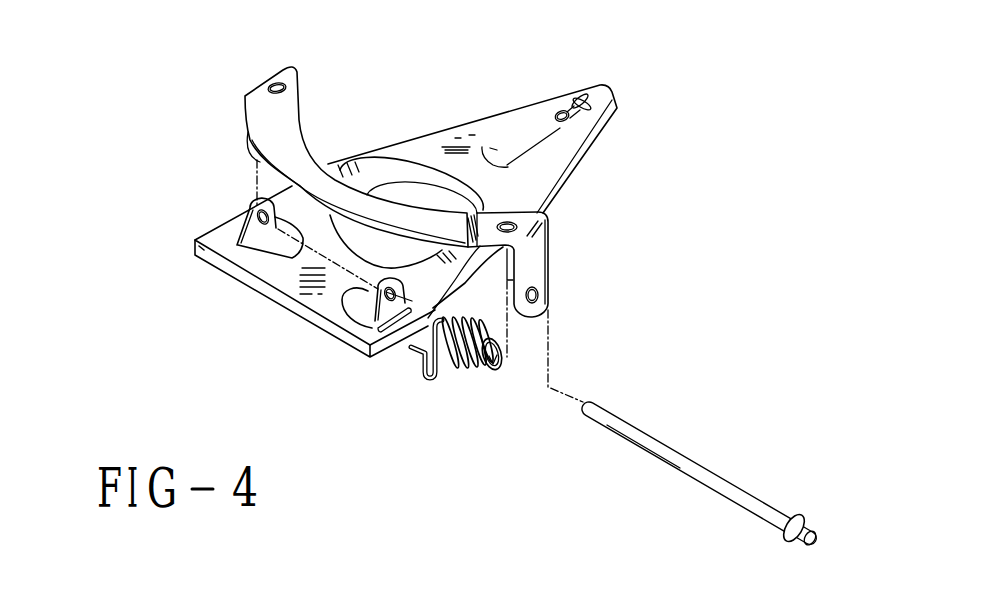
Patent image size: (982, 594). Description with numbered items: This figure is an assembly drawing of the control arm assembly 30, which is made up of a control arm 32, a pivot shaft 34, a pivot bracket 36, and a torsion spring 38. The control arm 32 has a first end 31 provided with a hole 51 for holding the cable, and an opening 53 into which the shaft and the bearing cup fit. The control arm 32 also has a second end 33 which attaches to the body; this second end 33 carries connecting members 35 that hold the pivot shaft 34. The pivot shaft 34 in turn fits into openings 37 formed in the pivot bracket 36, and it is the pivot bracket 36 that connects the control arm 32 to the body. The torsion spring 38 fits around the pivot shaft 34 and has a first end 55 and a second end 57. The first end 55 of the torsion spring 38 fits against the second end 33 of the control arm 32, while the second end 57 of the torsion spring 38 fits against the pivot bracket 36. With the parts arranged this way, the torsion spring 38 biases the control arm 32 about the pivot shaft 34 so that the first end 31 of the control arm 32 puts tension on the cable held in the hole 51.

The control arm assembly 30 is at (764, 164).
The first end 31 is at (612, 92).
The control arm 32 is at (445, 142).
The second end 33 is at (312, 324).
The pivot shaft 34 is at (630, 407).
The connecting members 35 is at (252, 227).
The pivot bracket 36 is at (238, 128).
The openings 37 is at (536, 295).
The torsion spring 38 is at (460, 370).
The hole 51 is at (557, 114).
The opening 53 is at (401, 194).
The first end 55 is at (412, 349).
The second end 57 is at (497, 359).